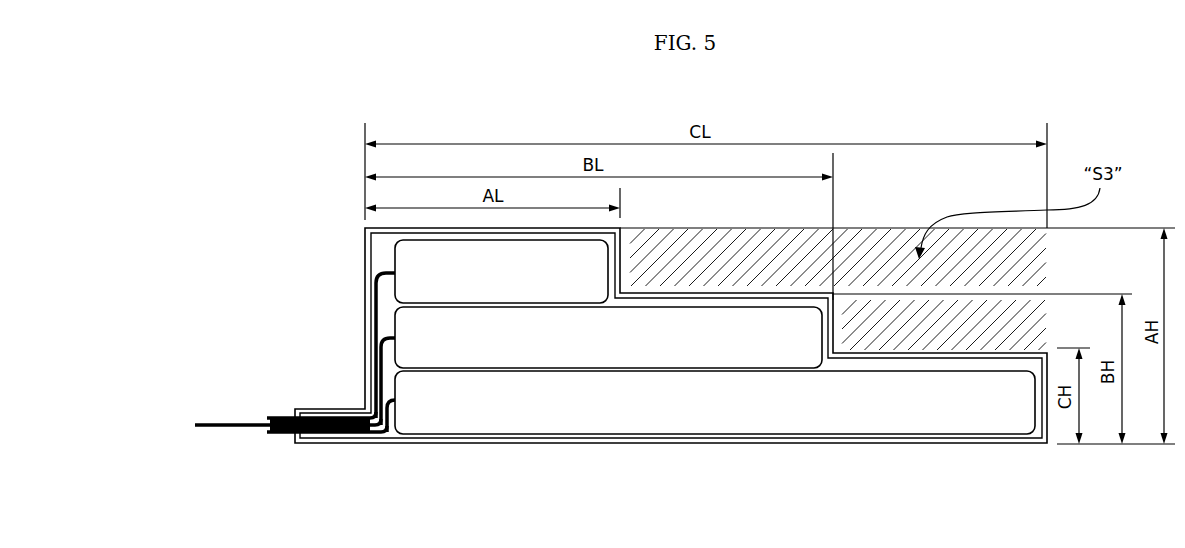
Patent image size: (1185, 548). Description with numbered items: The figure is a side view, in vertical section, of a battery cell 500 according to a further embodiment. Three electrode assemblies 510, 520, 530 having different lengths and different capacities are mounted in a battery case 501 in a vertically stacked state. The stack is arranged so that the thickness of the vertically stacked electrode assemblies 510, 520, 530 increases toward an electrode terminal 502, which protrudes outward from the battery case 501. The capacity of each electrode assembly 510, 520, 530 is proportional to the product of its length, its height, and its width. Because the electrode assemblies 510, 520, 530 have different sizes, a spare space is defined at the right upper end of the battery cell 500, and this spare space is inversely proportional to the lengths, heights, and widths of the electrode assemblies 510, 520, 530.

The battery cell 500 is at (196, 152).
The battery case 501 is at (397, 437).
The electrode terminal 502 is at (233, 430).
The electrode assembly 510 is at (448, 273).
The electrode assembly 520 is at (448, 338).
The electrode assembly 530 is at (448, 402).